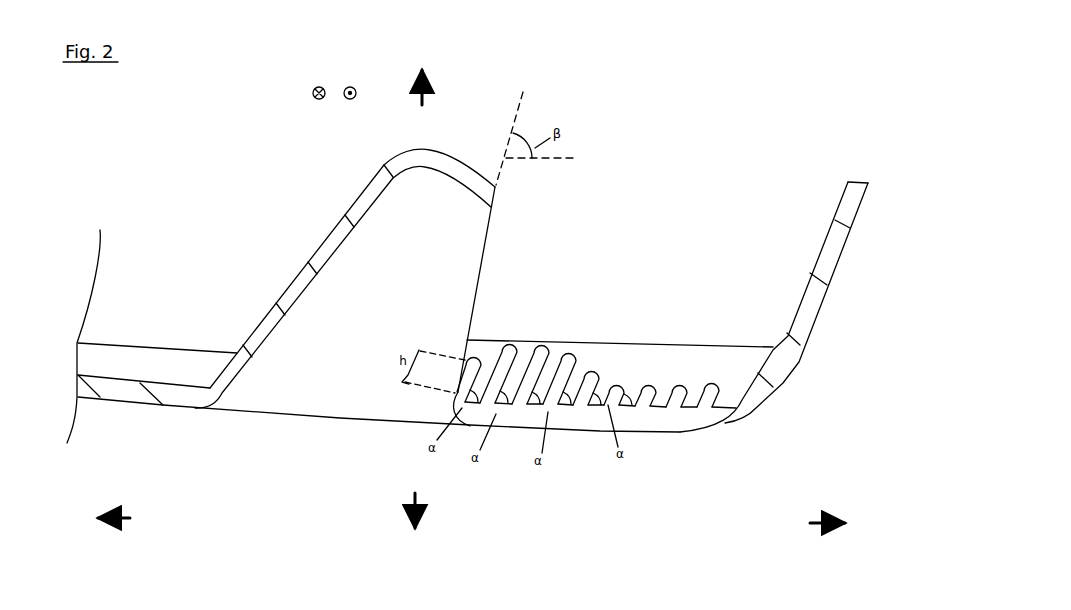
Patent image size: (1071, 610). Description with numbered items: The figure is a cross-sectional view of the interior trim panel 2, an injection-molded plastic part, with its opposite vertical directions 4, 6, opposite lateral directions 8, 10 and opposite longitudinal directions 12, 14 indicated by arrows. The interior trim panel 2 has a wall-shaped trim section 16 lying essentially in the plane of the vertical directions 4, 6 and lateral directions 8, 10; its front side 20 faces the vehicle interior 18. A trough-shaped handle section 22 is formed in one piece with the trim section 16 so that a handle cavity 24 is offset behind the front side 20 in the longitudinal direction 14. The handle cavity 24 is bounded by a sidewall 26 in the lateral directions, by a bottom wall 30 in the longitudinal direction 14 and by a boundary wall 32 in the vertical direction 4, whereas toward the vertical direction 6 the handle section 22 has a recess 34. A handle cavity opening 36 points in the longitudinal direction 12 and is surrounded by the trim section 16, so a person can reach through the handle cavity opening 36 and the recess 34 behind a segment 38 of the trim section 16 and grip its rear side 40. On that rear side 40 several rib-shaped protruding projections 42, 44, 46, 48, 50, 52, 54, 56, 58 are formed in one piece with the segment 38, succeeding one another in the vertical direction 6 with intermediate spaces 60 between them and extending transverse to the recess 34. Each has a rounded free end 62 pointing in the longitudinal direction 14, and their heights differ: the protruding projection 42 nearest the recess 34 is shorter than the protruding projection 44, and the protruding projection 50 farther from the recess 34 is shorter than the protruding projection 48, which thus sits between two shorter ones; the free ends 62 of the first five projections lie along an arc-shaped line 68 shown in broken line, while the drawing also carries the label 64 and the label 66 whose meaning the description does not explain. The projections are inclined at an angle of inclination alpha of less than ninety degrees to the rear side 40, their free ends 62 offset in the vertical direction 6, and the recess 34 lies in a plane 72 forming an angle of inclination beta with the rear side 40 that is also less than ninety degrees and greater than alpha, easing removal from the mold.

The interior trim panel 2 is at (790, 105).
The vertical direction 4 is at (113, 520).
The vertical direction 6 is at (822, 523).
The lateral direction 8 is at (310, 90).
The lateral direction 10 is at (356, 87).
The longitudinal direction 12 is at (412, 507).
The longitudinal direction 14 is at (422, 90).
The trim section 16 is at (160, 413).
The vehicle interior 18 is at (297, 506).
The front side 20 is at (132, 408).
The handle section 22 is at (350, 186).
The handle cavity 24 is at (257, 394).
The sidewall 26 is at (442, 197).
The bottom wall 30 is at (465, 177).
The boundary wall 32 is at (297, 289).
The recess 34 is at (493, 241).
The handle cavity opening 36 is at (263, 420).
The segment 38 is at (578, 418).
The rear side 40 is at (576, 352).
The protruding projection 42 is at (456, 395).
The protruding projection 44 is at (480, 405).
The protruding projection 46 is at (525, 398).
The protruding projection 48 is at (530, 402).
The protruding projection 50 is at (570, 405).
The protruding projection 52 is at (620, 405).
The protruding projection 54 is at (657, 408).
The protruding projection 56 is at (690, 410).
The protruding projection 58 is at (747, 400).
The intermediate space 60 is at (696, 399).
The free end 62 is at (614, 310).
The upper boundary line 64 is at (752, 352).
The first projection 66 is at (472, 372).
The arc-shaped line 68 is at (472, 372).
The plane 72 is at (520, 105).